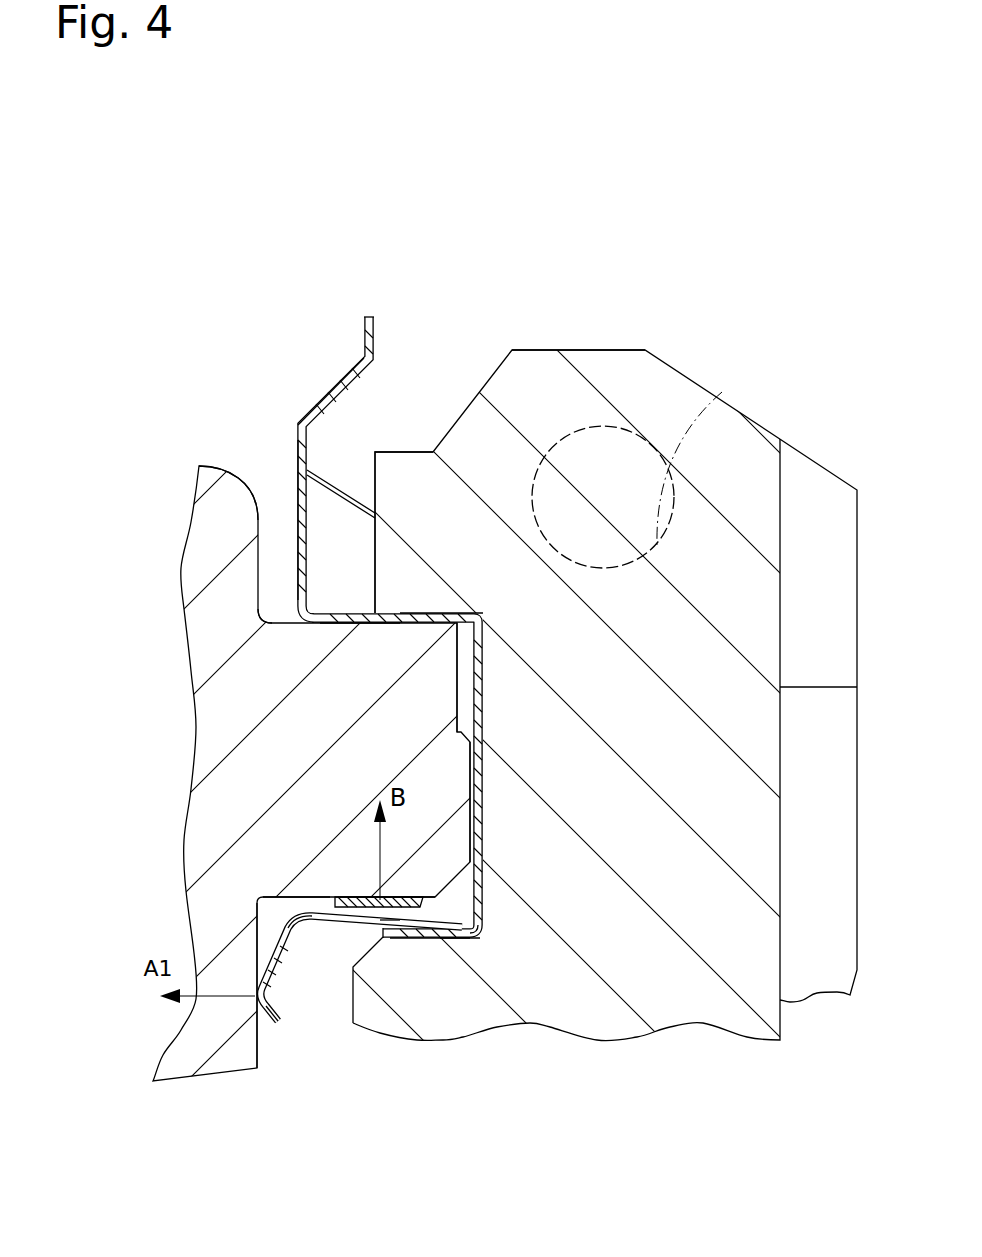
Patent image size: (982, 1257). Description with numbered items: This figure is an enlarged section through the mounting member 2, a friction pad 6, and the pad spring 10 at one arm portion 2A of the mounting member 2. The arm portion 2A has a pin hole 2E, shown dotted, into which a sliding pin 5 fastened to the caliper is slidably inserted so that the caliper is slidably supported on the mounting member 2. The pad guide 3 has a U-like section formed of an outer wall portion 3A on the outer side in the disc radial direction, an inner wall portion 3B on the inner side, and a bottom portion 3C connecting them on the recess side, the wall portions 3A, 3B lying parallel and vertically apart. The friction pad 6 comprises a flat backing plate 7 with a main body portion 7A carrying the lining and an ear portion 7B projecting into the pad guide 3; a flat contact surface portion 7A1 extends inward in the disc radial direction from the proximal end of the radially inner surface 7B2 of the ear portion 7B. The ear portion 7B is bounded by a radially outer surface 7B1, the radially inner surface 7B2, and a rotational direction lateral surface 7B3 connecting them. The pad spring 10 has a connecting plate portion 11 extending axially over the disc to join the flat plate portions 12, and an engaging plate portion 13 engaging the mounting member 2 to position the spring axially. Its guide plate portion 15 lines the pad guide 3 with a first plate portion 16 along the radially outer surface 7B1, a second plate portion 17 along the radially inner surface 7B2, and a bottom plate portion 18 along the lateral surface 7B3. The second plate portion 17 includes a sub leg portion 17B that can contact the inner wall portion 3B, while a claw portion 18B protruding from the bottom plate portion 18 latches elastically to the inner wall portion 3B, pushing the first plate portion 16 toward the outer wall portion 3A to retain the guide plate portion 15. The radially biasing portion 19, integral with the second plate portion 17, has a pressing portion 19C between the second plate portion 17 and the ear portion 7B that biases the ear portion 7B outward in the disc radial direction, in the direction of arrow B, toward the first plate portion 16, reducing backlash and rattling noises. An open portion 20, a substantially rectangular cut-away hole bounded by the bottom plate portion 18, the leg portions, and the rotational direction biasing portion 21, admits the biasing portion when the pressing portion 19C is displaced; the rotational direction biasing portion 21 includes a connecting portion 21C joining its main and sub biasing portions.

The mounting member 2 is at (596, 337).
The arm portion 2A is at (645, 403).
The pin hole 2E is at (722, 392).
The pad guide 3 is at (380, 627).
The outer wall portion 3A is at (447, 611).
The inner wall portion 3B is at (418, 940).
The bottom portion 3C is at (462, 941).
The sliding pin 5 is at (553, 447).
The friction pad 6 is at (218, 456).
The backing plate 7 is at (226, 727).
The main body portion 7A is at (230, 891).
The contact surface portion 7A1 is at (257, 1050).
The ear portion 7B is at (380, 764).
The radially outer surface 7B1 is at (271, 609).
The radially inner surface 7B2 is at (293, 900).
The rotational direction lateral surface 7B3 is at (483, 840).
The pad spring 10 is at (370, 305).
The connecting plate portion 11 is at (333, 393).
The flat plate portion 12 is at (297, 503).
The engaging plate portion 13 is at (343, 492).
The guide plate portion 15 is at (363, 610).
The first plate portion 16 is at (407, 611).
The second plate portion 17 is at (345, 940).
The sub leg portion 17B is at (345, 903).
The bottom plate portion 18 is at (483, 807).
The claw portion 18B is at (454, 940).
The radially biasing portion 19 is at (368, 897).
The pressing portion 19C is at (380, 932).
The open portion 20 is at (262, 942).
The rotational direction biasing portion 21 is at (262, 978).
The connecting portion 21C is at (278, 1005).